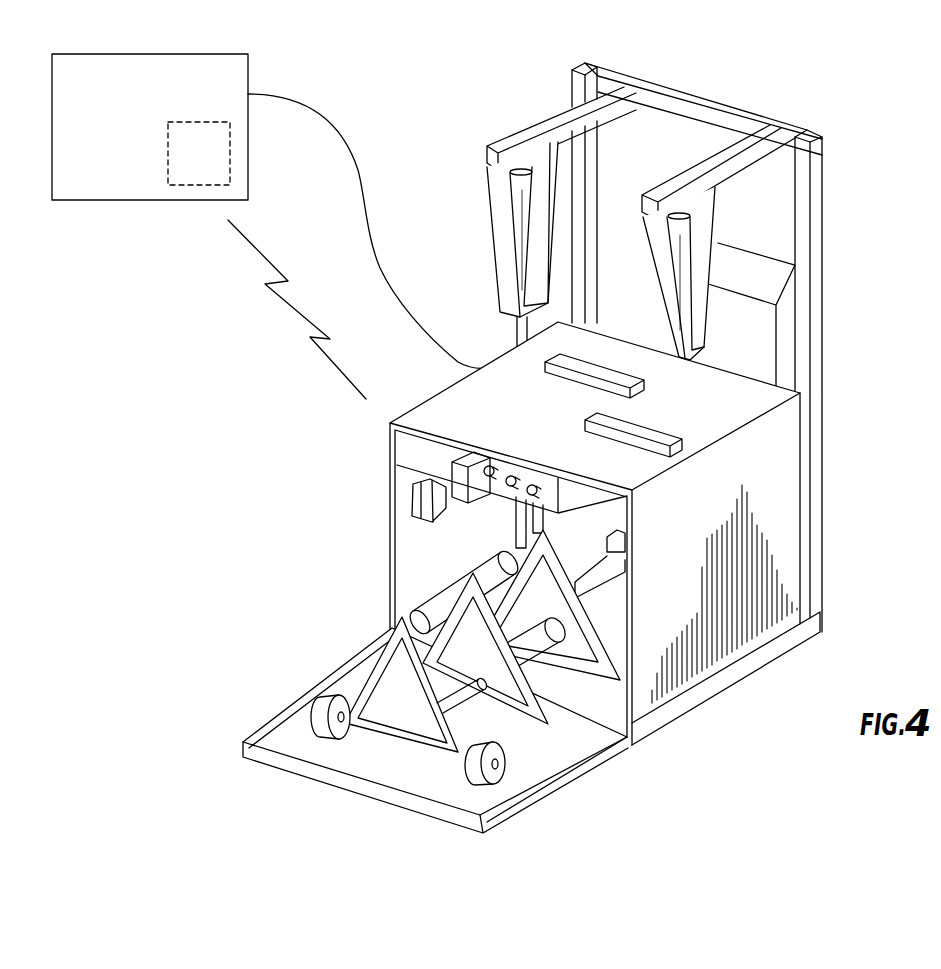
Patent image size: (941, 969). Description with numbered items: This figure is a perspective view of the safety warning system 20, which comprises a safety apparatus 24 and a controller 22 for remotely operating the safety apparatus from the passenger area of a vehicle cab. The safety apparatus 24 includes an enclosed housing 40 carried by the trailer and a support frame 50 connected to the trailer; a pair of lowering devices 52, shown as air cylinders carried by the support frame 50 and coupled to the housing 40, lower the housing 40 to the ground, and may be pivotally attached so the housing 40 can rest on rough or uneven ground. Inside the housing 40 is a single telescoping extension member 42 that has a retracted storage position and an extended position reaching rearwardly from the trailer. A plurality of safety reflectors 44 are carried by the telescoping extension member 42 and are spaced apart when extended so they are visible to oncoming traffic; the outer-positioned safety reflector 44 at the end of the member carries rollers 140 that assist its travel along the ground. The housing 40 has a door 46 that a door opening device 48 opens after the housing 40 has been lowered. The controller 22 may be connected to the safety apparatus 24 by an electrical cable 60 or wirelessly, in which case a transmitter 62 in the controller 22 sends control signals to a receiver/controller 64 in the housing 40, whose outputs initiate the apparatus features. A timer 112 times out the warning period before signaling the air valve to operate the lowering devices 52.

The safety warning system 20 is at (400, 75).
The controller 22 is at (248, 78).
The safety apparatus 24 is at (848, 440).
The housing 40 is at (735, 633).
The telescoping extension member 42 is at (460, 702).
The safety reflectors 44 is at (393, 633).
The door 46 is at (243, 743).
The door opening device 48 is at (430, 600).
The support frame 50 is at (819, 180).
The lowering device 52 is at (520, 219).
The electrical cable 60 is at (320, 120).
The transmitter 62 is at (230, 165).
The receiver/controller 64 is at (466, 452).
The timer 112 is at (410, 500).
The roller 140 is at (303, 698).